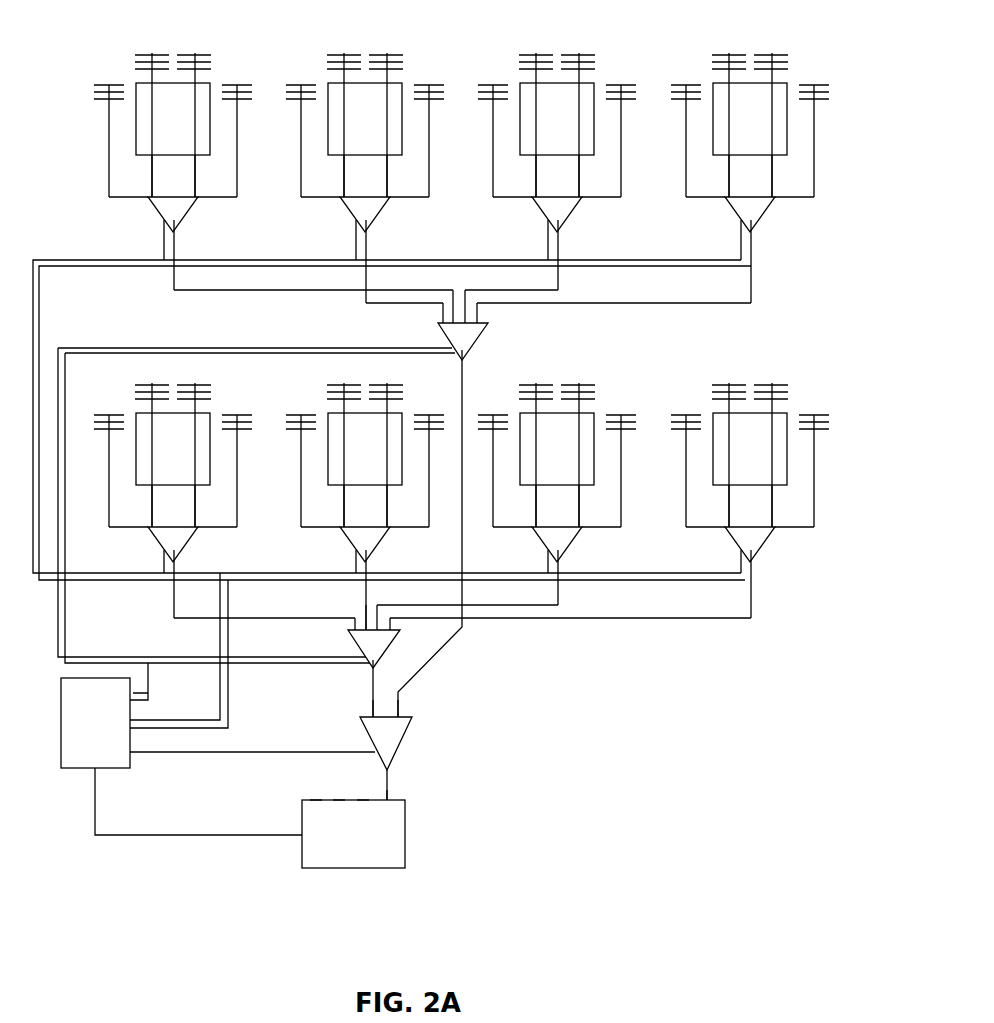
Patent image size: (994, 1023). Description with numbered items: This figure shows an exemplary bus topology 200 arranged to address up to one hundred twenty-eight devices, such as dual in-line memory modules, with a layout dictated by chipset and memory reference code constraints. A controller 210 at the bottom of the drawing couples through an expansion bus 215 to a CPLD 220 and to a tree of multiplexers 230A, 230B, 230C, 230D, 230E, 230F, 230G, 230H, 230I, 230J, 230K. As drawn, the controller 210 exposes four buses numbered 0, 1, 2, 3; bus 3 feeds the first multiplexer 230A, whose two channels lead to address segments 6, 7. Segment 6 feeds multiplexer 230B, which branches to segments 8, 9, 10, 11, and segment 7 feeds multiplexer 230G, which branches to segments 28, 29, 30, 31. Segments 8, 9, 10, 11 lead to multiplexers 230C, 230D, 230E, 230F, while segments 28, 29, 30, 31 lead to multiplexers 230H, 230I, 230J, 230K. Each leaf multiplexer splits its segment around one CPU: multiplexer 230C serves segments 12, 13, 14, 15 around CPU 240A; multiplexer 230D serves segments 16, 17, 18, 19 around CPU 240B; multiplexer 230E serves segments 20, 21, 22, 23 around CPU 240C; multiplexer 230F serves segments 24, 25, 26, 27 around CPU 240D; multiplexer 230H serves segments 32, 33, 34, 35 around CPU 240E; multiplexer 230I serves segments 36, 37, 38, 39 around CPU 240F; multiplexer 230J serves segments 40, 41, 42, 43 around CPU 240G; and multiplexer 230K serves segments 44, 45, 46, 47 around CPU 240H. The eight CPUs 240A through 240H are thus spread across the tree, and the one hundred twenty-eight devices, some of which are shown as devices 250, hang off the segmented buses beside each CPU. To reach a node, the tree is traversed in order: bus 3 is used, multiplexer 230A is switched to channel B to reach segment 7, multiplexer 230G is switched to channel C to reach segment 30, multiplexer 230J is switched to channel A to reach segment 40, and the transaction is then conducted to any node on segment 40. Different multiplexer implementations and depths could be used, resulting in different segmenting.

The bus topology 200 is at (73, 117).
The controller 210 is at (341, 864).
The expansion bus 215 is at (178, 836).
The CPLD 220 is at (110, 769).
The multiplexer 230A is at (400, 750).
The multiplexer 230B is at (366, 664).
The multiplexer 230C is at (190, 546).
The multiplexer 230D is at (382, 546).
The multiplexer 230E is at (574, 546).
The multiplexer 230F is at (767, 546).
The multiplexer 230G is at (478, 344).
The multiplexer 230H is at (190, 216).
The multiplexer 230I is at (382, 216).
The multiplexer 230J is at (574, 216).
The multiplexer 230K is at (767, 216).
The central processing unit 240A is at (156, 467).
The central processing unit 240B is at (348, 467).
The central processing unit 240C is at (540, 467).
The central processing unit 240D is at (733, 467).
The central processing unit 240E is at (156, 137).
The central processing unit 240F is at (348, 137).
The central processing unit 240G is at (540, 137).
The central processing unit 240H is at (733, 137).
The devices 250 is at (224, 86).
The controller port 0 is at (316, 808).
The controller port 1 is at (339, 808).
The controller port 2 is at (363, 808).
The bus 3 is at (388, 803).
The multiplexer input 6 is at (366, 707).
The address segment 7 is at (404, 707).
The multiplexer input 8 is at (346, 624).
The multiplexer input 9 is at (359, 610).
The multiplexer input 10 is at (385, 610).
The multiplexer input 11 is at (402, 624).
The CPU port 12 is at (128, 526).
The CPU port 13 is at (160, 506).
The CPU port 14 is at (186, 506).
The CPU port 15 is at (217, 526).
The CPU port 16 is at (320, 526).
The CPU port 17 is at (352, 506).
The CPU port 18 is at (378, 506).
The CPU port 19 is at (409, 526).
The CPU port 20 is at (512, 526).
The CPU port 21 is at (544, 506).
The CPU port 22 is at (570, 506).
The CPU port 23 is at (601, 526).
The CPU port 24 is at (705, 526).
The CPU port 25 is at (737, 506).
The CPU port 26 is at (763, 506).
The CPU port 27 is at (794, 526).
The multiplexer input 28 is at (432, 314).
The multiplexer input 29 is at (449, 299).
The address segment 30 is at (475, 299).
The multiplexer input 31 is at (488, 314).
The CPU port 32 is at (128, 196).
The CPU port 33 is at (160, 176).
The CPU port 34 is at (186, 176).
The CPU port 35 is at (217, 196).
The CPU port 36 is at (320, 196).
The CPU port 37 is at (352, 176).
The CPU port 38 is at (378, 176).
The CPU port 39 is at (409, 196).
The address segment 40 is at (512, 196).
The CPU port 41 is at (544, 176).
The CPU port 42 is at (570, 176).
The CPU port 43 is at (601, 196).
The CPU port 44 is at (705, 196).
The CPU port 45 is at (737, 176).
The CPU port 46 is at (763, 176).
The CPU port 47 is at (794, 196).